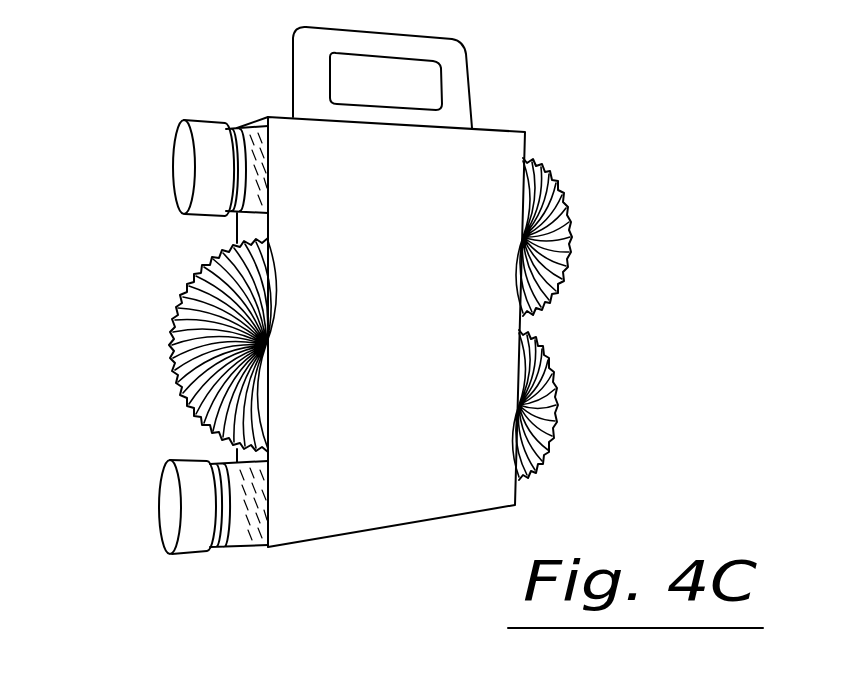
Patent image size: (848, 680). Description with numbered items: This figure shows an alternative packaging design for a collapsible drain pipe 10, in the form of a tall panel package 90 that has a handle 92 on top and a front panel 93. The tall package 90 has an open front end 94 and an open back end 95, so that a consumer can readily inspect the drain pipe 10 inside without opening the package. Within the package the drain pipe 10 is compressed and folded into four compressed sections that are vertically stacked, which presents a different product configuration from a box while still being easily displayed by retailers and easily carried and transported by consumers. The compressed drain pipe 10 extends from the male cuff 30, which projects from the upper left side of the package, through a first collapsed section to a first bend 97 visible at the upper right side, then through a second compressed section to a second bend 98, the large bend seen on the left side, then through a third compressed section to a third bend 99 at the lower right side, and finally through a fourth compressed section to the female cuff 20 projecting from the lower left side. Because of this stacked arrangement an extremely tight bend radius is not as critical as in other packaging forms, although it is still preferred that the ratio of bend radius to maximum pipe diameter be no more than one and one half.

The drain pipe 10 is at (596, 318).
The female cuff 20 is at (207, 550).
The male cuff 30 is at (202, 120).
The tall panel package 90 is at (549, 107).
The handle 92 is at (464, 48).
The front panel 93 is at (382, 177).
The open front end 94 is at (172, 243).
The open back end 95 is at (608, 268).
The first bend 97 is at (568, 212).
The second bend 98 is at (172, 343).
The third bend 99 is at (554, 410).